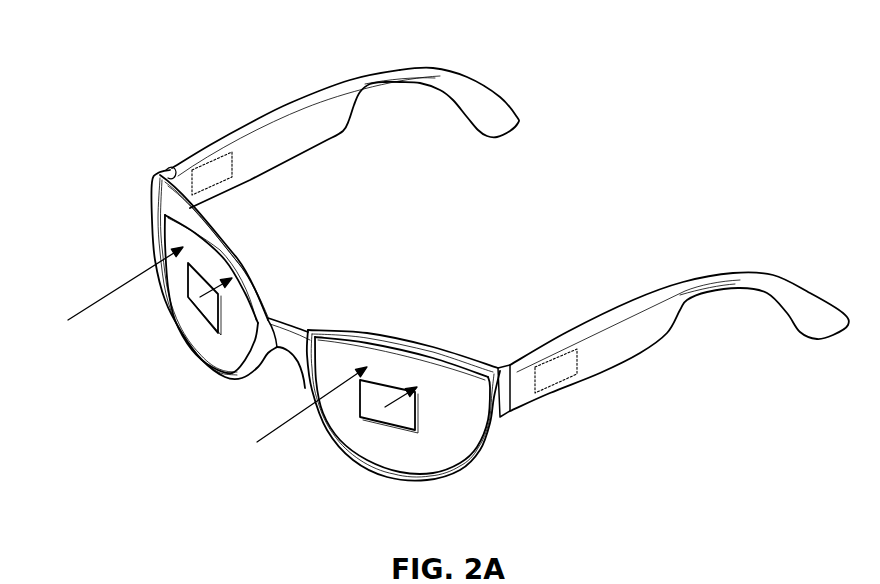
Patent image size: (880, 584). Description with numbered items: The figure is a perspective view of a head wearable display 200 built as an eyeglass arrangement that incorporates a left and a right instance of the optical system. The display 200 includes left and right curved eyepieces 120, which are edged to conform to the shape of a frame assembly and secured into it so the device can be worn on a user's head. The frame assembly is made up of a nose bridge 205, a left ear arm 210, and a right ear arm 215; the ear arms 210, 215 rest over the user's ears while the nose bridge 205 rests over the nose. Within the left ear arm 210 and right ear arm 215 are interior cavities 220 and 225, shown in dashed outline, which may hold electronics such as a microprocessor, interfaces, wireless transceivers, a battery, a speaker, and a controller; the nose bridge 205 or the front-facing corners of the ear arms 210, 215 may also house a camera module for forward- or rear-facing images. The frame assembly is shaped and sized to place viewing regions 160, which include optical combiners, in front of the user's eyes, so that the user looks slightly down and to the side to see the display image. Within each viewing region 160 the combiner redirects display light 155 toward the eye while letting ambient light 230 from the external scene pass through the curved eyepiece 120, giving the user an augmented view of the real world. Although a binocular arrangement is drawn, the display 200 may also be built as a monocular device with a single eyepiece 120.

The head wearable display 200 is at (660, 59).
The nose bridge 205 is at (280, 322).
The left ear arm 210 is at (670, 287).
The right ear arm 215 is at (293, 110).
The interior cavity 220 is at (557, 375).
The interior cavity 225 is at (216, 175).
The curved eyepiece 120 is at (170, 294).
The display light 155 is at (208, 277).
The viewing region 160 is at (193, 326).
The ambient light 230 is at (88, 306).